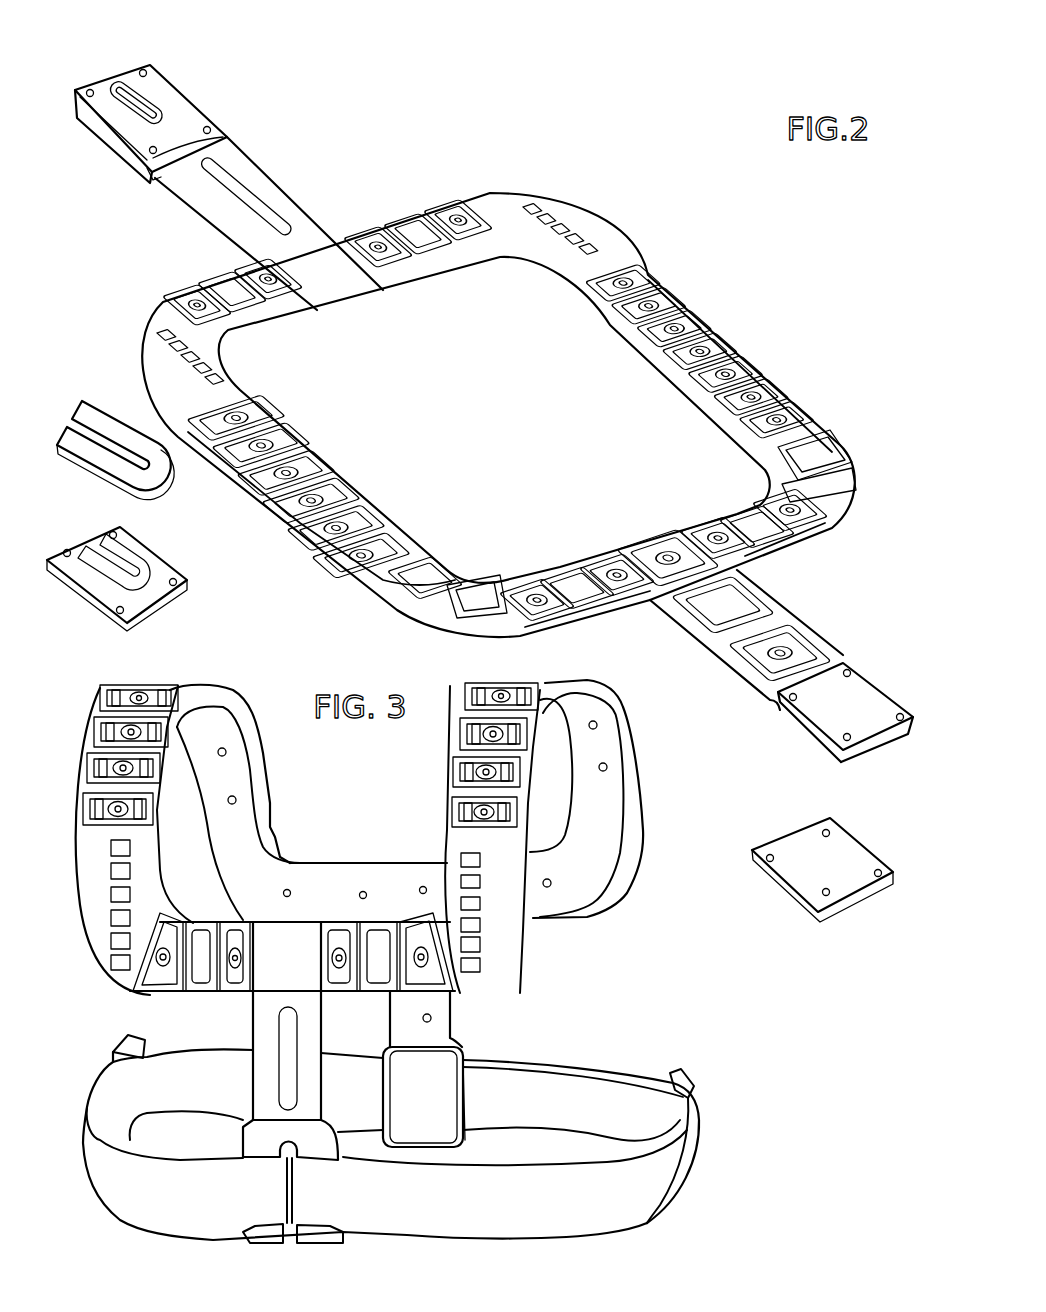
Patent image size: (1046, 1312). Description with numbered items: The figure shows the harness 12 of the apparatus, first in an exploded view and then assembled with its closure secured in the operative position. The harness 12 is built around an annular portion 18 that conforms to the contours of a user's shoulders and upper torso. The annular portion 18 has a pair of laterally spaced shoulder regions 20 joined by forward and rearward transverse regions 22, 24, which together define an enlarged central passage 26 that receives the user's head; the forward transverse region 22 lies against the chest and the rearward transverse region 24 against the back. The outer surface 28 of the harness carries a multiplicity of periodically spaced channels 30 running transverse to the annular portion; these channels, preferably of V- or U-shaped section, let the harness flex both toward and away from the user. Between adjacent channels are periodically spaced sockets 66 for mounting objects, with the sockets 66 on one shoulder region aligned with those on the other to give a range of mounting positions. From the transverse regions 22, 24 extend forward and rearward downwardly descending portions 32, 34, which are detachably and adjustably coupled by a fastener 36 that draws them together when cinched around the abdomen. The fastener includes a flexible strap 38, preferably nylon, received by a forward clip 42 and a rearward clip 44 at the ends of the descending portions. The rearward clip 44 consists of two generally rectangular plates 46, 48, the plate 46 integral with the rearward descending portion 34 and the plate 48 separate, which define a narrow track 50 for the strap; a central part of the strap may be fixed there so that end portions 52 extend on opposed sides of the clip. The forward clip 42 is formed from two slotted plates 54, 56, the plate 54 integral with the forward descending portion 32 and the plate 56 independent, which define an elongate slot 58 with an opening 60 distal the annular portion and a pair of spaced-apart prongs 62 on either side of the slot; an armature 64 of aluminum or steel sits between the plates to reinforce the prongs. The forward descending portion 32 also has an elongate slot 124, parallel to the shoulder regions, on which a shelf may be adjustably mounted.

In FIG. 2, the harness 12 is at (478, 138).
In FIG. 3, the harness 12 is at (102, 686).
In FIG. 2, the annular portion 18 is at (682, 263).
In FIG. 3, the annular portion 18 is at (82, 960).
In FIG. 2, the shoulder regions 20 is at (748, 330).
In FIG. 3, the shoulder regions 20 is at (204, 678).
In FIG. 2, the forward transverse region 22 is at (378, 295).
In FIG. 3, the forward transverse region 22 is at (293, 915).
In FIG. 2, the rearward transverse region 24 is at (676, 510).
In FIG. 3, the rearward transverse region 24 is at (342, 860).
In FIG. 2, the central passage 26 is at (541, 425).
In FIG. 2, the outer surface 28 is at (838, 485).
In FIG. 3, the outer surface 28 is at (250, 697).
In FIG. 2, the channels 30 is at (760, 552).
In FIG. 2, the forward downwardly descending portion 32 is at (292, 195).
In FIG. 3, the forward downwardly descending portion 32 is at (252, 1012).
In FIG. 2, the rearward downwardly descending portion 34 is at (800, 615).
In FIG. 3, the rearward downwardly descending portion 34 is at (452, 1000).
In FIG. 3, the fastener 36 is at (536, 1052).
In FIG. 3, the strap 38 is at (623, 1065).
In FIG. 2, the forward clip 42 is at (218, 108).
In FIG. 3, the forward clip 42 is at (337, 1113).
In FIG. 2, the rearward clip 44 is at (893, 676).
In FIG. 3, the rearward clip 44 is at (470, 1075).
In FIG. 2, the plate 46 is at (900, 735).
In FIG. 2, the plate 48 is at (802, 840).
In FIG. 3, the plate 48 is at (412, 1103).
In FIG. 2, the track 50 is at (798, 725).
In FIG. 3, the end portions 52 is at (192, 1216).
In FIG. 2, the slotted plate 54 is at (92, 125).
In FIG. 2, the slotted plate 56 is at (170, 565).
In FIG. 2, the elongate slot 58 is at (150, 95).
In FIG. 3, the elongate slot 58 is at (272, 1240).
In FIG. 2, the opening 60 is at (120, 70).
In FIG. 3, the opening 60 is at (295, 1245).
In FIG. 2, the prongs 62 is at (140, 148).
In FIG. 3, the prongs 62 is at (268, 1135).
In FIG. 2, the armature 64 is at (160, 470).
In FIG. 2, the sockets 66 is at (278, 290).
In FIG. 2, the elongate slot 124 is at (233, 187).
In FIG. 3, the elongate slot 124 is at (278, 1068).